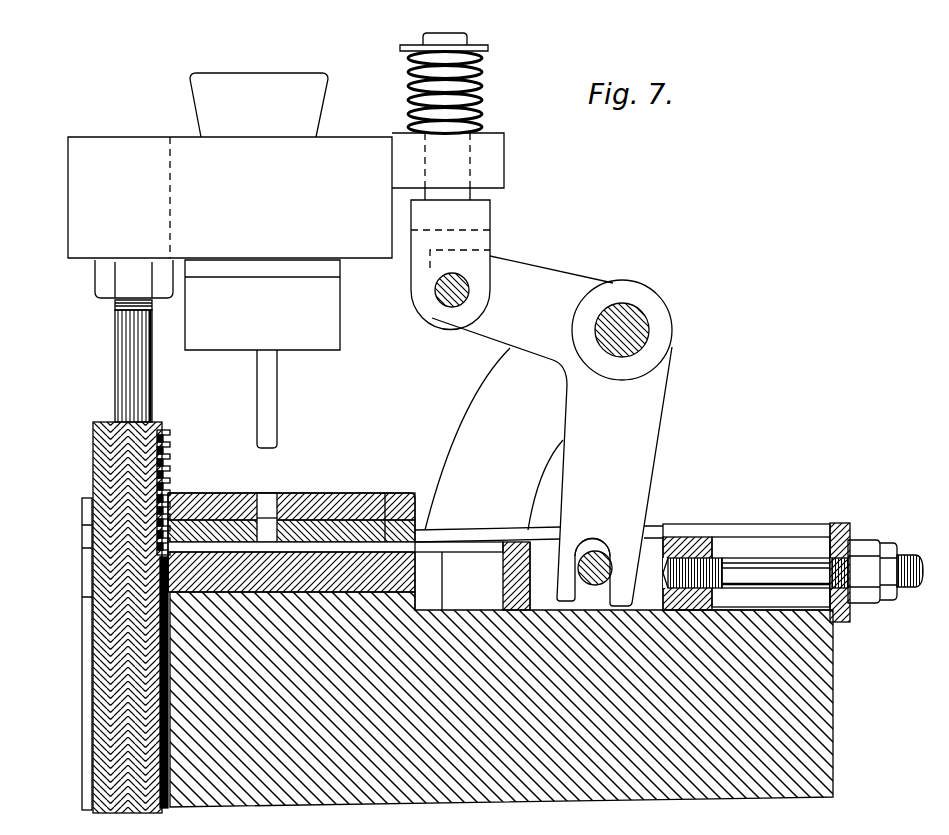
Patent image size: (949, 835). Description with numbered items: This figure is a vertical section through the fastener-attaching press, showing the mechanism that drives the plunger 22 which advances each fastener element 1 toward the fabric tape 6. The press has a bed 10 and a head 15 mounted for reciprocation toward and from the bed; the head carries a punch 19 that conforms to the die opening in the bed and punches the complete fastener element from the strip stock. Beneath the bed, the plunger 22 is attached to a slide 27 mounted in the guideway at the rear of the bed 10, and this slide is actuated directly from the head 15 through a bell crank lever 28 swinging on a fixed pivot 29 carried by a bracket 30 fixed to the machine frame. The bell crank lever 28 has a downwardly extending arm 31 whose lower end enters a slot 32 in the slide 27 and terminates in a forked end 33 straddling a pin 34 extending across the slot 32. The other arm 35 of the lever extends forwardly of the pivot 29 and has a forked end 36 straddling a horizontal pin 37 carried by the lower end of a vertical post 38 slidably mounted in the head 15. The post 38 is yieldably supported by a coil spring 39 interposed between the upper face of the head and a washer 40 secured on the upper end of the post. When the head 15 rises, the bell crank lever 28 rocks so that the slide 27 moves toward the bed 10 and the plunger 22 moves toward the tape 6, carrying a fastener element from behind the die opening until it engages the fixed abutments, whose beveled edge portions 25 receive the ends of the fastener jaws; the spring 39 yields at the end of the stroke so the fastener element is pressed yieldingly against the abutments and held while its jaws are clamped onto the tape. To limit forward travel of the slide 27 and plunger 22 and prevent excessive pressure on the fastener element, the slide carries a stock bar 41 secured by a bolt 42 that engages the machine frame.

The fastener element 1 is at (169, 446).
The fabric tape 6 is at (100, 444).
The bed 10 is at (322, 493).
The head 15 is at (88, 219).
The punch 19 is at (267, 433).
The plunger 22 is at (386, 493).
The beveled edge portions 25 is at (82, 653).
The slide 27 is at (688, 540).
The bell crank lever 28 is at (660, 374).
The fixed pivot 29 is at (628, 326).
The bracket 30 is at (490, 402).
The downwardly extending arm 31 is at (637, 446).
The slot 32 is at (647, 552).
The forked end 33 is at (599, 554).
The pin 34 is at (588, 552).
The arm 35 is at (524, 278).
The forked end 36 is at (422, 320).
The horizontal pin 37 is at (452, 312).
The vertical post 38 is at (462, 195).
The coil spring 39 is at (478, 87).
The washer 40 is at (491, 52).
The stock bar 41 is at (850, 619).
The bolt 42 is at (748, 570).